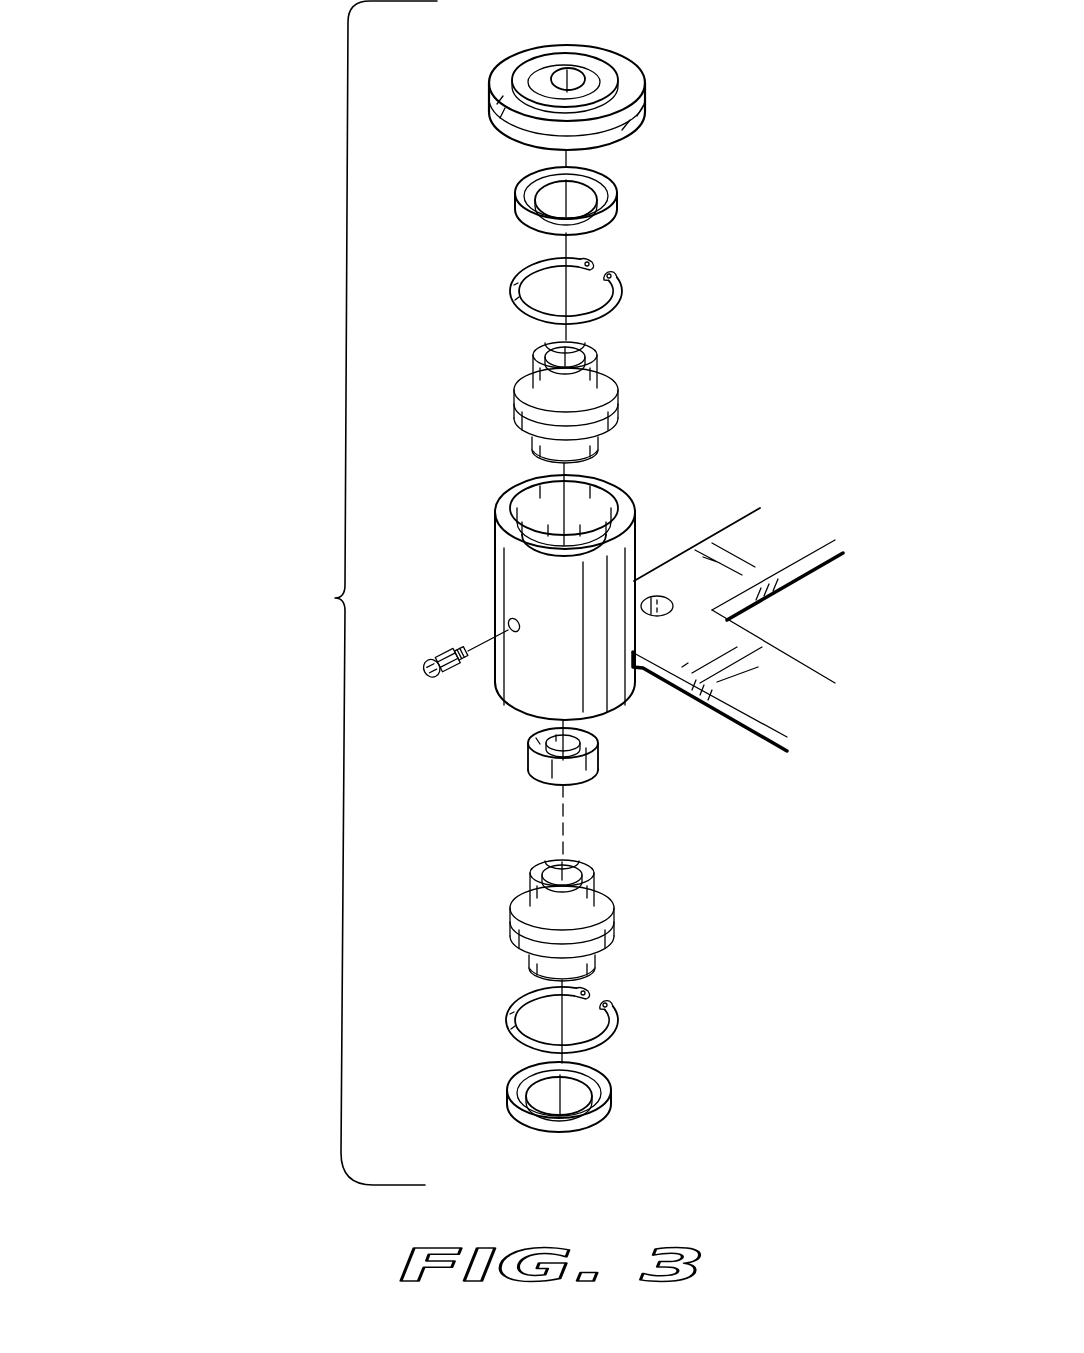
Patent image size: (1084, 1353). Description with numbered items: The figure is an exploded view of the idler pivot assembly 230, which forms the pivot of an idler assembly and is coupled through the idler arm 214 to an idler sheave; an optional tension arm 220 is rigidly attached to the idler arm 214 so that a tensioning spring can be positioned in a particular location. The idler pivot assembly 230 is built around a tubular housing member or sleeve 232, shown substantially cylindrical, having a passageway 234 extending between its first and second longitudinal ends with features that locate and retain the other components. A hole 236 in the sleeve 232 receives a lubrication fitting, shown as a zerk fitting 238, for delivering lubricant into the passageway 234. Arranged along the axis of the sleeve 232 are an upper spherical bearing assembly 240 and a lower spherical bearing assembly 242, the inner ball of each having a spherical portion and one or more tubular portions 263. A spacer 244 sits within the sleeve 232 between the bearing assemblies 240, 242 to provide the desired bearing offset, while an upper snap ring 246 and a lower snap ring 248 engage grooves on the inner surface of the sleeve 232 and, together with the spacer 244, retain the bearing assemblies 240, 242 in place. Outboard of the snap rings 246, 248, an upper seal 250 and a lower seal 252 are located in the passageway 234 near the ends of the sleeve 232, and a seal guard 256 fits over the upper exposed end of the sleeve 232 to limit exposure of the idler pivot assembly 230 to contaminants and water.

The idler arm 214 is at (743, 513).
The tension arm 220 is at (805, 660).
The idler pivot assembly 230 is at (323, 598).
The sleeve 232 is at (497, 520).
The passageway 234 is at (598, 503).
The hole 236 is at (508, 633).
The zerk fitting 238 is at (452, 647).
The first spherical bearing assembly 240 is at (510, 403).
The second spherical bearing assembly 242 is at (508, 923).
The spacer 244 is at (597, 767).
The upper snap ring 246 is at (623, 297).
The lower snap ring 248 is at (617, 1013).
The upper seal 250 is at (617, 197).
The lower seal 252 is at (610, 1093).
The seal guard 256 is at (630, 85).
The tubular portion 263 is at (600, 440).